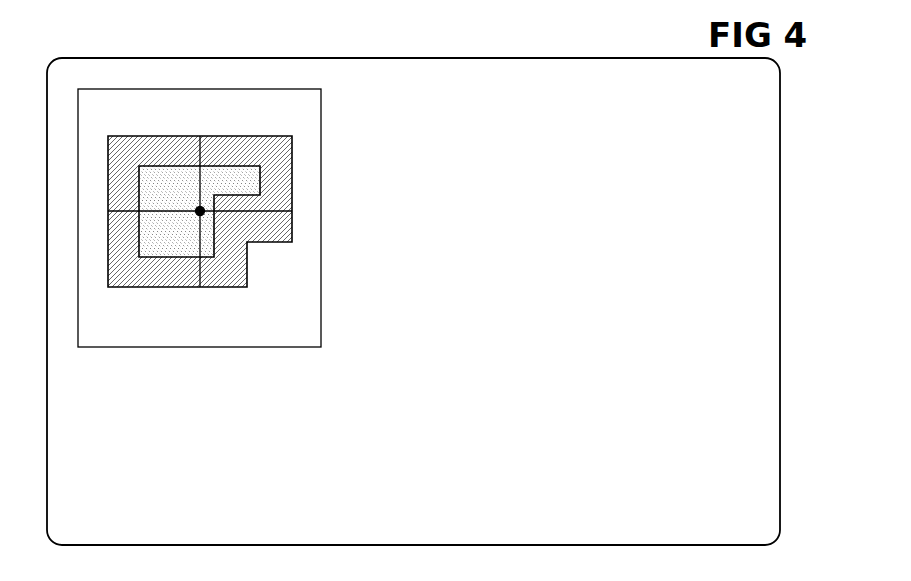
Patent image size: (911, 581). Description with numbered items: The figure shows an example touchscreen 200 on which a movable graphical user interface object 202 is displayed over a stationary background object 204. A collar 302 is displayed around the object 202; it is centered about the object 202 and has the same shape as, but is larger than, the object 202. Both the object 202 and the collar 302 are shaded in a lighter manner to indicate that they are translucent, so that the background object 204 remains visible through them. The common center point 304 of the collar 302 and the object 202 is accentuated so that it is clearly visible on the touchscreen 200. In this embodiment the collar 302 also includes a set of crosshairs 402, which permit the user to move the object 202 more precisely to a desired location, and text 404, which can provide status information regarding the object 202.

The touchscreen 200 is at (739, 88).
The background object 204 is at (166, 89).
The collar 302 is at (232, 136).
The object 202 is at (262, 168).
The center point 304 is at (200, 211).
The crosshairs 402 is at (131, 206).
The text 404 is at (170, 279).